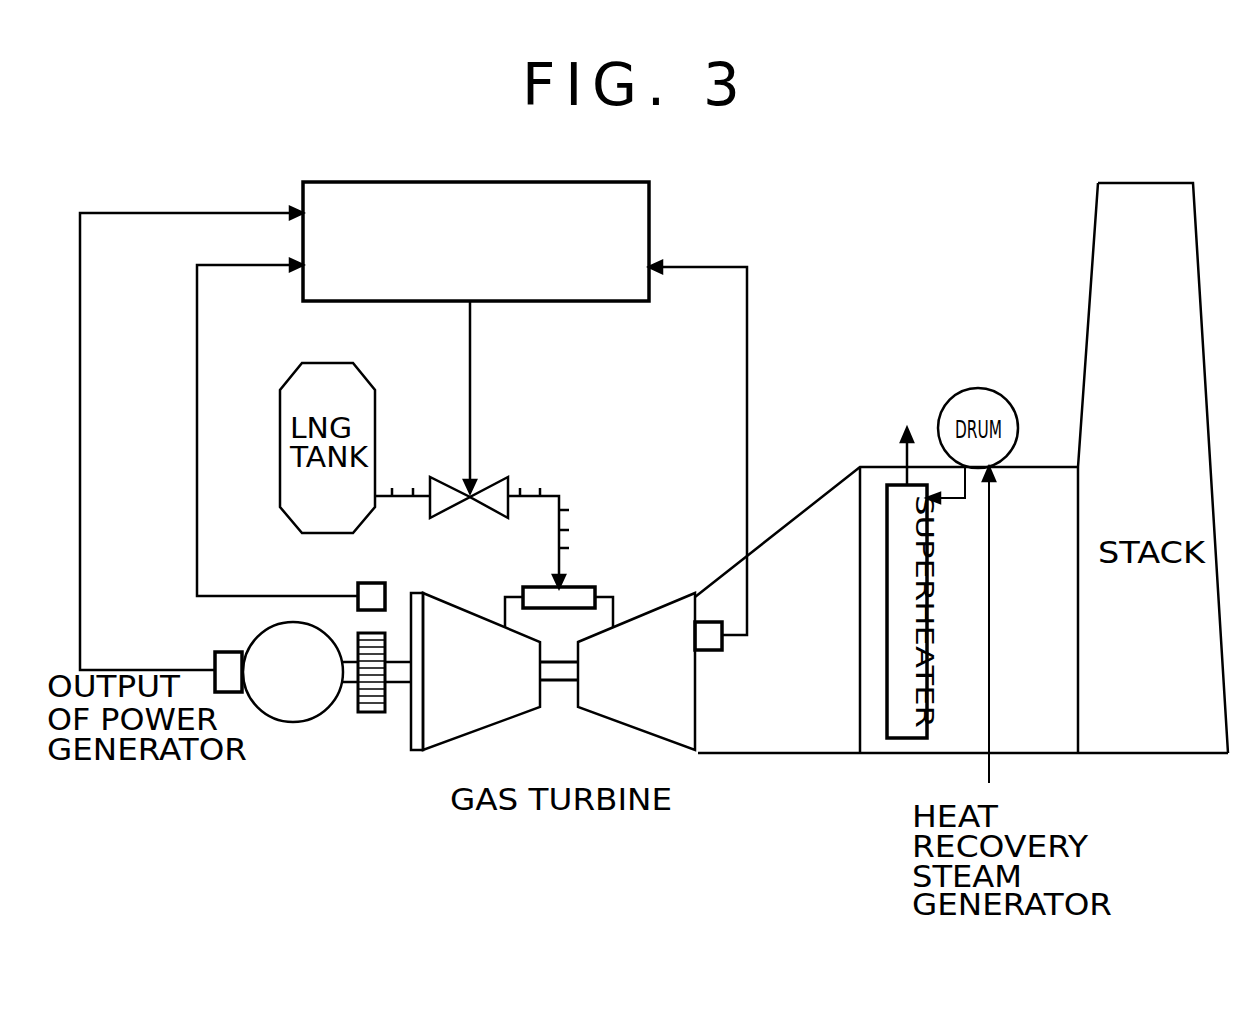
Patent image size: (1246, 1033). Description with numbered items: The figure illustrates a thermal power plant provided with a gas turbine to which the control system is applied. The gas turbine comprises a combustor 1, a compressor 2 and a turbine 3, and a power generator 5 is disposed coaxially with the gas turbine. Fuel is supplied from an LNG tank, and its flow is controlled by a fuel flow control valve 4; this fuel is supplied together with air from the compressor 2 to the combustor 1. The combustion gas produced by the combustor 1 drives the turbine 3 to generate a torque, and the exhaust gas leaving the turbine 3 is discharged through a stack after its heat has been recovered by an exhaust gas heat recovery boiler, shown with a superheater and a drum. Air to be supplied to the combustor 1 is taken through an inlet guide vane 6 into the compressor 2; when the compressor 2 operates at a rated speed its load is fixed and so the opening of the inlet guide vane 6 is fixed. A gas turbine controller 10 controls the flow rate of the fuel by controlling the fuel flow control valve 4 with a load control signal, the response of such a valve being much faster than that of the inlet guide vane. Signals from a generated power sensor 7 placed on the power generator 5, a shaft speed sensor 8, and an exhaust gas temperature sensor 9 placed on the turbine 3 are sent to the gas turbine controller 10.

The combustor 1 is at (572, 582).
The compressor 2 is at (447, 750).
The turbine 3 is at (665, 744).
The fuel flow control valve 4 is at (447, 480).
The power generator 5 is at (293, 723).
The inlet guide vane 6 is at (412, 592).
The generated power sensor 7 is at (207, 656).
The shaft speed sensor 8 is at (356, 590).
The exhaust gas temperature sensor 9 is at (713, 652).
The gas turbine controller 10 is at (649, 206).